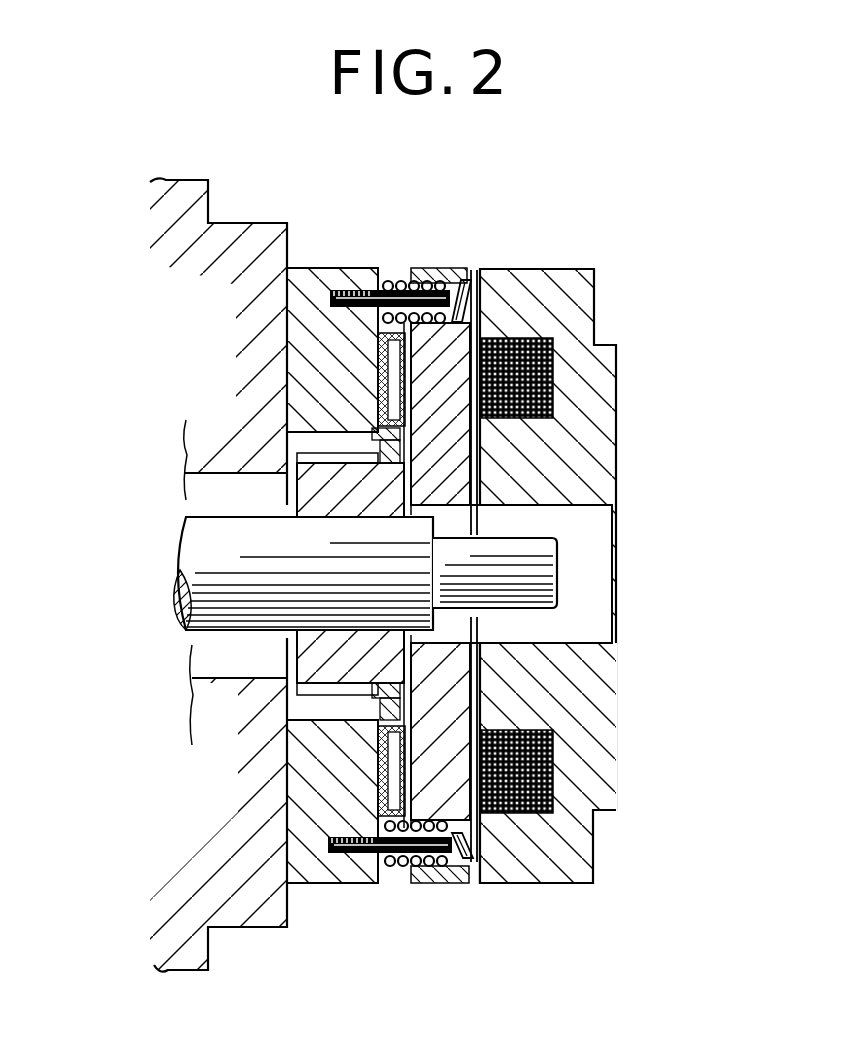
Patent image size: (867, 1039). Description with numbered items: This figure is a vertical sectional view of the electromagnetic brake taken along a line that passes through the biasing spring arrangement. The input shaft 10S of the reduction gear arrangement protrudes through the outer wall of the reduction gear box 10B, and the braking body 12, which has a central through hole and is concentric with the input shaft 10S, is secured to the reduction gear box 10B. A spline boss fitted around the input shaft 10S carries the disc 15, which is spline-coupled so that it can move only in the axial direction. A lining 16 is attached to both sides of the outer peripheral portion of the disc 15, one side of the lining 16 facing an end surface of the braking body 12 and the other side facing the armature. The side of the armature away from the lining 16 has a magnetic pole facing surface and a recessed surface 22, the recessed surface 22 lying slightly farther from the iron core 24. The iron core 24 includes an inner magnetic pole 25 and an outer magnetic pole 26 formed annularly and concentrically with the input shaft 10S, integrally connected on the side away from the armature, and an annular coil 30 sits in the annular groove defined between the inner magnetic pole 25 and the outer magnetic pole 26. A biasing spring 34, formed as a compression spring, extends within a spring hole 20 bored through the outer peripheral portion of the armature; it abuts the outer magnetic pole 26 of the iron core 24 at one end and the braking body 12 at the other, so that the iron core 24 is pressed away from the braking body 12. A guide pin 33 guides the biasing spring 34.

The reduction gear box 10B is at (247, 919).
The input shaft 10S is at (183, 530).
The braking body 12 is at (325, 268).
The disc 15 is at (378, 362).
The lining 16 is at (437, 268).
The spring hole 20 is at (452, 880).
The recessed surface 22 is at (482, 800).
The iron core 24 is at (535, 269).
The inner magnetic pole 25 is at (476, 702).
The outer magnetic pole 26 is at (482, 855).
The annular coil 30 is at (553, 368).
The guide pin 33 is at (425, 864).
The biasing spring 34 is at (400, 860).